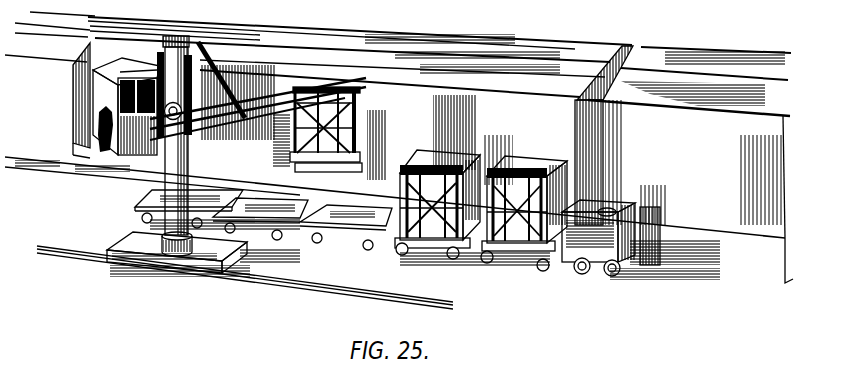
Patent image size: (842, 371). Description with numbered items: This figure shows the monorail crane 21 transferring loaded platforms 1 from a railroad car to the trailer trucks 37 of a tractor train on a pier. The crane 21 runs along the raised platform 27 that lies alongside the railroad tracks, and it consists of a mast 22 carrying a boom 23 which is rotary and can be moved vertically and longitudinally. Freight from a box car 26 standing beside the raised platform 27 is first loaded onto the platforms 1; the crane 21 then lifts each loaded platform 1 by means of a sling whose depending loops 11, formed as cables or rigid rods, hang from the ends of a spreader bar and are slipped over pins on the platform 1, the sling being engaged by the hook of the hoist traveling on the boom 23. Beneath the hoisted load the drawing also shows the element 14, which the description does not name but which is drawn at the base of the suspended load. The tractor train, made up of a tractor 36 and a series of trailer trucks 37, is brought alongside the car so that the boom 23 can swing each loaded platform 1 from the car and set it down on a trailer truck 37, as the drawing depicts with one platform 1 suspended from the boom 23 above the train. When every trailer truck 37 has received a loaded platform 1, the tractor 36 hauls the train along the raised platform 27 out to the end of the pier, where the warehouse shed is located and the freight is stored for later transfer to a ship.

The platform 1 is at (358, 157).
The depending loops 11 is at (363, 102).
The platform 14 is at (360, 170).
The monorail crane 21 is at (253, 253).
The mast 22 is at (190, 172).
The boom 23 is at (252, 115).
The box car 26 is at (565, 42).
The raised platform 27 is at (783, 239).
The tractor 36 is at (600, 280).
The trailer trucks 37 is at (137, 216).